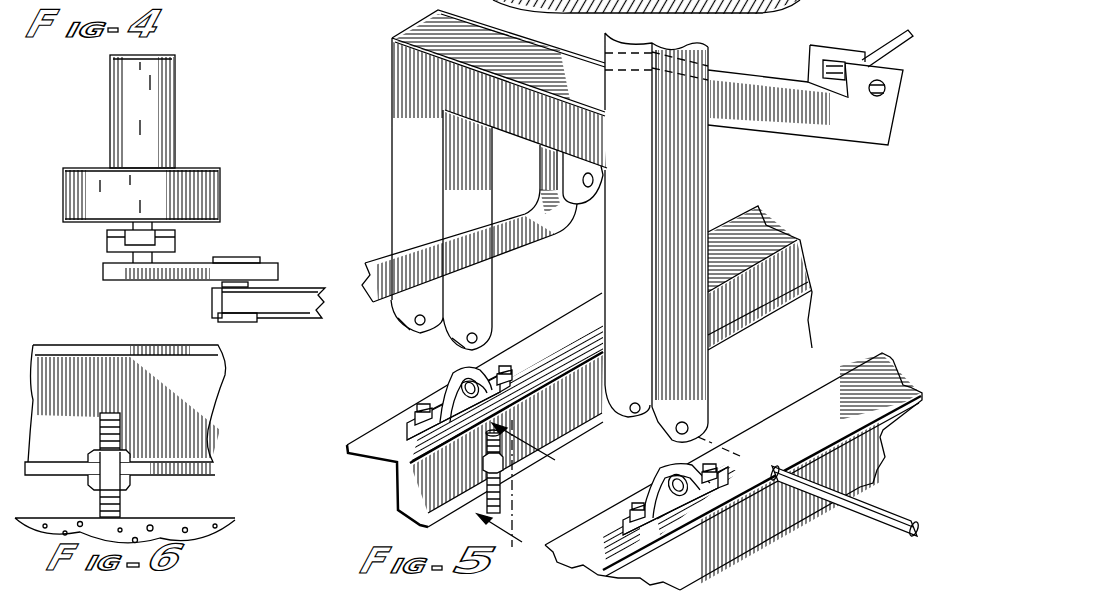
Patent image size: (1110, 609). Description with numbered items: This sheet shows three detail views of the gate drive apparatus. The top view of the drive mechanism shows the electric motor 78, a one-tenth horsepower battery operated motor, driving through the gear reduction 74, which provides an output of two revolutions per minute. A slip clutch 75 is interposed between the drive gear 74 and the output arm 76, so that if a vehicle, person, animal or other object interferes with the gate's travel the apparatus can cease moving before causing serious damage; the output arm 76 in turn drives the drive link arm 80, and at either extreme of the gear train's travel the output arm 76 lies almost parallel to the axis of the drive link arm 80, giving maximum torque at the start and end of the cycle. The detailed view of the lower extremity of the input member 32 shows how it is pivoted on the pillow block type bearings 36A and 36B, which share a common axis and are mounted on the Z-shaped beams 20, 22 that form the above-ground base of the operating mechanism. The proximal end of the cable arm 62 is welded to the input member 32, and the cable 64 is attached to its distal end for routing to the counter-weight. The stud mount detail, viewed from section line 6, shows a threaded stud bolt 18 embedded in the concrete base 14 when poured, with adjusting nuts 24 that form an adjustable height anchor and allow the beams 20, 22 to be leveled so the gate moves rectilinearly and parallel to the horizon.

In FIG. 5, the section line 6— 6 is at (523, 486).
In FIG. 6, the concrete base 14 is at (186, 519).
In FIG. 6, the threaded stud bolt 18 is at (100, 416).
In FIG. 5, the threaded stud bolt 18 is at (478, 447).
In FIG. 5, the Z-shaped beam 20 is at (806, 416).
In FIG. 5, the Z-shaped beam 22 is at (768, 237).
In FIG. 6, the adjusting nut 24 is at (92, 455).
In FIG. 5, the adjusting nut 24 is at (500, 482).
In FIG. 5, the input member 32 is at (704, 182).
In FIG. 5, the pillow block type bearing 36A is at (640, 478).
In FIG. 5, the pillow block type bearing 36B is at (475, 367).
In FIG. 5, the cable arm 62 is at (788, 114).
In FIG. 5, the cable 64 is at (896, 44).
In FIG. 4, the gear reduction 74 is at (220, 207).
In FIG. 4, the slip clutch 75 is at (107, 243).
In FIG. 4, the output arm 76 is at (190, 280).
In FIG. 4, the electric motor 78 is at (175, 148).
In FIG. 4, the drive link arm 80 is at (285, 303).
In FIG. 5, the drive link arm 80 is at (540, 232).